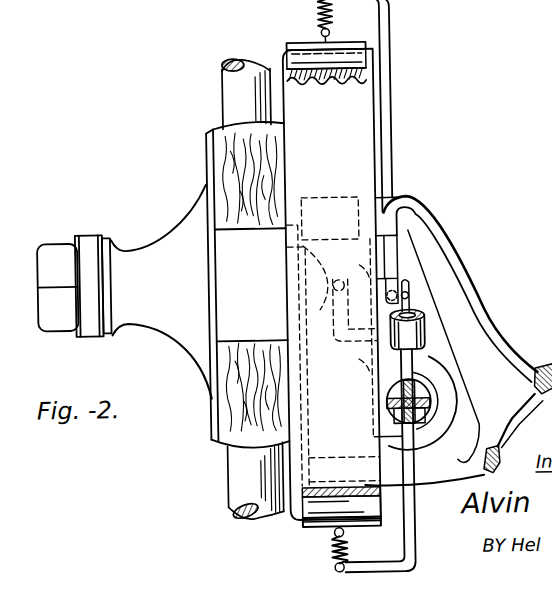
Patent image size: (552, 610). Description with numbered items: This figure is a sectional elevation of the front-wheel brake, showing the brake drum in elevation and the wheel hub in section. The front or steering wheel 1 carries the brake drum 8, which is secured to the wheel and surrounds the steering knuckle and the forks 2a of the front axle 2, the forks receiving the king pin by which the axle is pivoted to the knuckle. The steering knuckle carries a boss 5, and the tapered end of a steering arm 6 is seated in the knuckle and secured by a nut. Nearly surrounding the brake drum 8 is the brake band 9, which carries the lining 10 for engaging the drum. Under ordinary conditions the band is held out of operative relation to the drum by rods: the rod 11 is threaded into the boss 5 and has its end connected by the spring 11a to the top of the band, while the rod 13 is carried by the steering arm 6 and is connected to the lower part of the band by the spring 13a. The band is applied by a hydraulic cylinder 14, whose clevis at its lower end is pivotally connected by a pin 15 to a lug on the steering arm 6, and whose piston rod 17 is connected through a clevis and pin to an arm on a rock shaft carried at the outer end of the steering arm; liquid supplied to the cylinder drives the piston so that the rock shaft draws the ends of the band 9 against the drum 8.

The front or steering wheel 1 is at (224, 183).
The front axle 2 is at (517, 418).
The forks 2a is at (391, 213).
The boss 5 is at (399, 280).
The steering arm 6 is at (431, 425).
The brake drum 8 is at (343, 287).
The brake band 9 is at (311, 75).
The lining 10 is at (343, 75).
The rod 11 is at (396, 108).
The spring 11a is at (330, 25).
The rod 13 is at (411, 509).
The spring 13a is at (327, 553).
The cylinder 14 is at (426, 343).
The pin 15 is at (514, 421).
The piston rod 17 is at (411, 304).